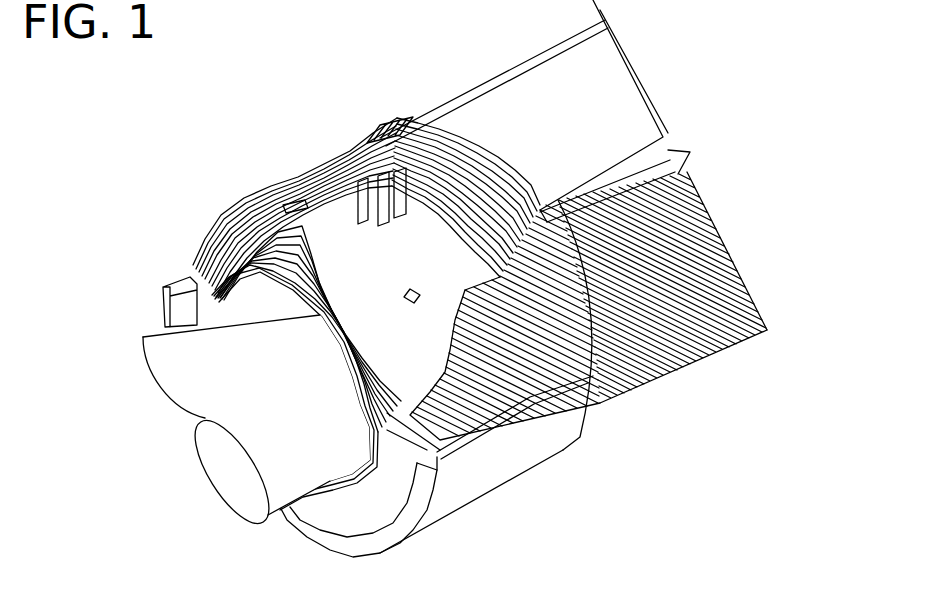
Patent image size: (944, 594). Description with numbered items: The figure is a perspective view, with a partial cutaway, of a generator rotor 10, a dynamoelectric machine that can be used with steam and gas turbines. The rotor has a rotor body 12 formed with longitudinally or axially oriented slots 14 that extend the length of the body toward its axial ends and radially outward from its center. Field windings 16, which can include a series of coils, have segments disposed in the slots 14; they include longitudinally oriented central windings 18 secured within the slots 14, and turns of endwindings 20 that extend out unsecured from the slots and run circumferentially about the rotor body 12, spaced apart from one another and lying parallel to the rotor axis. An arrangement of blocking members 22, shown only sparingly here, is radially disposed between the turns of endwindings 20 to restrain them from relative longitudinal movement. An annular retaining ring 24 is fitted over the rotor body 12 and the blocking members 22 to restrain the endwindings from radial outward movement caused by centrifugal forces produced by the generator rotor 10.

The generator rotor 10 is at (236, 126).
The rotor body 12 is at (532, 97).
The slots 14 is at (690, 203).
The field windings 16 is at (640, 210).
The central windings 18 is at (580, 213).
The turns of endwindings 20 is at (463, 182).
The blocking members 22 is at (508, 351).
The annular retaining ring 24 is at (483, 468).